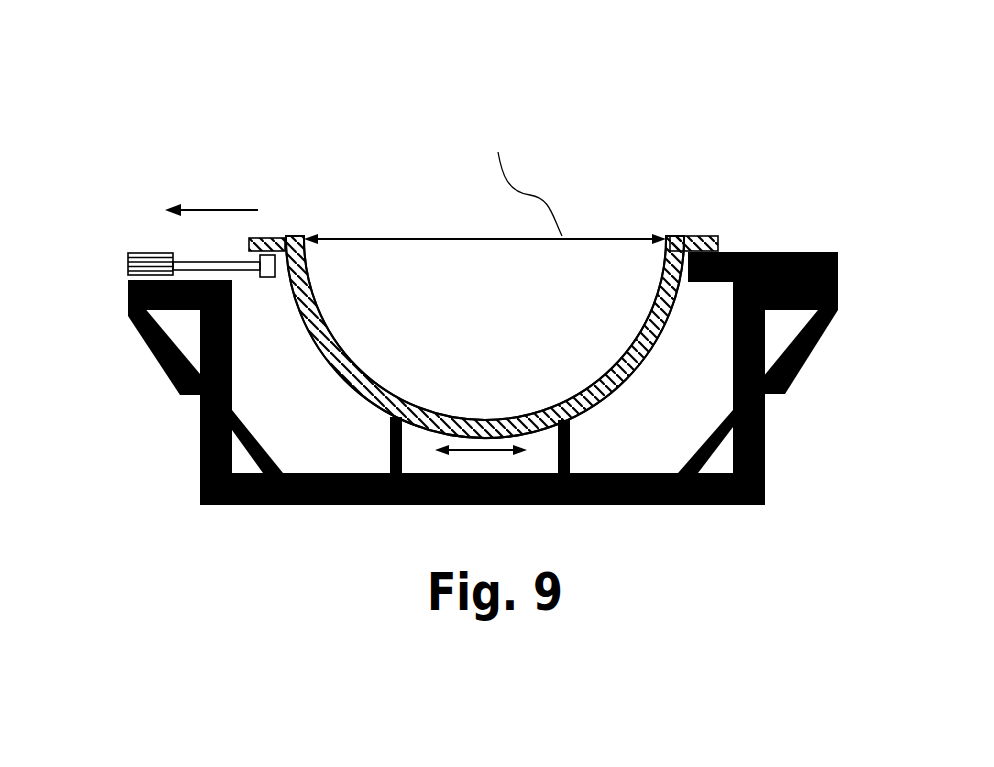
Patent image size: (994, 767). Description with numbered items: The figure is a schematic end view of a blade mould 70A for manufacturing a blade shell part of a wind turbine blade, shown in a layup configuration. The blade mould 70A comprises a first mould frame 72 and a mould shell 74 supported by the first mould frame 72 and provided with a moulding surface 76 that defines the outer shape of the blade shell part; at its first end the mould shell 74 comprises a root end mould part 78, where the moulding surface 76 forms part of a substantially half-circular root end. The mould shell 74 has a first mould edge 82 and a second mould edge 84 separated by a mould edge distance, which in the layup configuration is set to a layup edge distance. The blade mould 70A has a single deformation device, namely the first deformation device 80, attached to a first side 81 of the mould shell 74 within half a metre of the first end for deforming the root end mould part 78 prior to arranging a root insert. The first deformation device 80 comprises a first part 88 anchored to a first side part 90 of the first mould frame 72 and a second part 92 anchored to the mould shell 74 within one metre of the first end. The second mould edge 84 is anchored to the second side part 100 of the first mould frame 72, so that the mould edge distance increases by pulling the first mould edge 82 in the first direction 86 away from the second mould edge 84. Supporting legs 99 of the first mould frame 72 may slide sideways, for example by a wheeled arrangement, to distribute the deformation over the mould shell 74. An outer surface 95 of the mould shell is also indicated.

The blade mould 70A is at (474, 270).
The first mould frame 72 is at (488, 378).
The mould shell 74 is at (485, 337).
The moulding surface 76 is at (402, 414).
The root end mould part 78 is at (493, 432).
The first deformation device 80 is at (162, 249).
The first side 81 is at (308, 282).
The first mould edge 82 is at (292, 237).
The second mould edge 84 is at (676, 235).
The first direction 86 is at (195, 210).
The first part 88 is at (133, 253).
The first side part 90 is at (128, 290).
The second part 92 is at (266, 278).
The outer surface of mold 95 is at (668, 276).
The supporting legs 99 is at (390, 440).
The second side part 100 is at (838, 302).